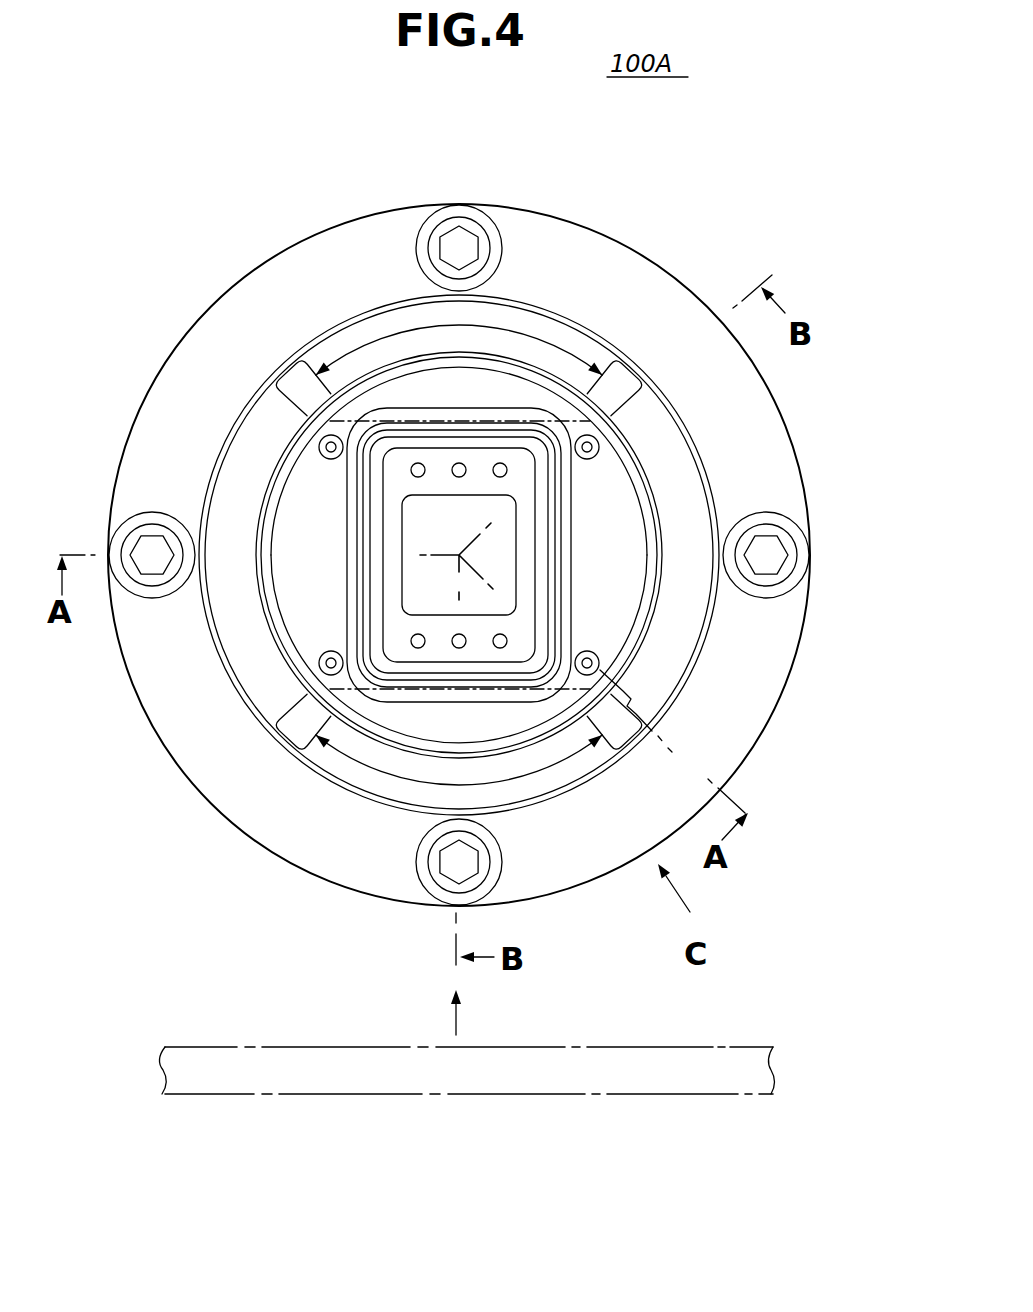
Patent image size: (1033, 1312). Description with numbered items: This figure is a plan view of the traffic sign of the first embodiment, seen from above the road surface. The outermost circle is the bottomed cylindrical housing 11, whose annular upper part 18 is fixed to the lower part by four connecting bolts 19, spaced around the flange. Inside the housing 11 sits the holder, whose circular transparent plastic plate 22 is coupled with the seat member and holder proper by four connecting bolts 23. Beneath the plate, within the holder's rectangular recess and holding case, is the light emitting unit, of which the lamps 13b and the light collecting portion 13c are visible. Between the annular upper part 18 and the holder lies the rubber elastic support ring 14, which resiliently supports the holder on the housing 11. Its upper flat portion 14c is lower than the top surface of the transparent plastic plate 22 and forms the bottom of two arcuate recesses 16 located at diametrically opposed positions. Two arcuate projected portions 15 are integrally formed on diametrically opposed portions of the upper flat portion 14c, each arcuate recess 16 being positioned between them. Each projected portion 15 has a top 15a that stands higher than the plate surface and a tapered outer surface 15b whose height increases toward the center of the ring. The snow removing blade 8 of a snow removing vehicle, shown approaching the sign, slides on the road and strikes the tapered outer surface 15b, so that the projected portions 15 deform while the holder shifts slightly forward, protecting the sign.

The snow removing blade 8 is at (633, 1078).
The housing 11 is at (586, 220).
The lamps 13b is at (413, 637).
The light collecting portion 13c is at (410, 515).
The elastic support ring 14 is at (532, 800).
The upper flat portion 14c is at (375, 320).
The arcuate projected portions 15 is at (221, 455).
The top 15a is at (255, 420).
The tapered outer surface 15b is at (228, 632).
The arcuate recesses 16 is at (510, 330).
The annular upper part 18 is at (635, 272).
The connecting bolts 19 is at (458, 240).
The transparent plastic plate 22 is at (613, 678).
The connecting bolts 23 is at (323, 440).